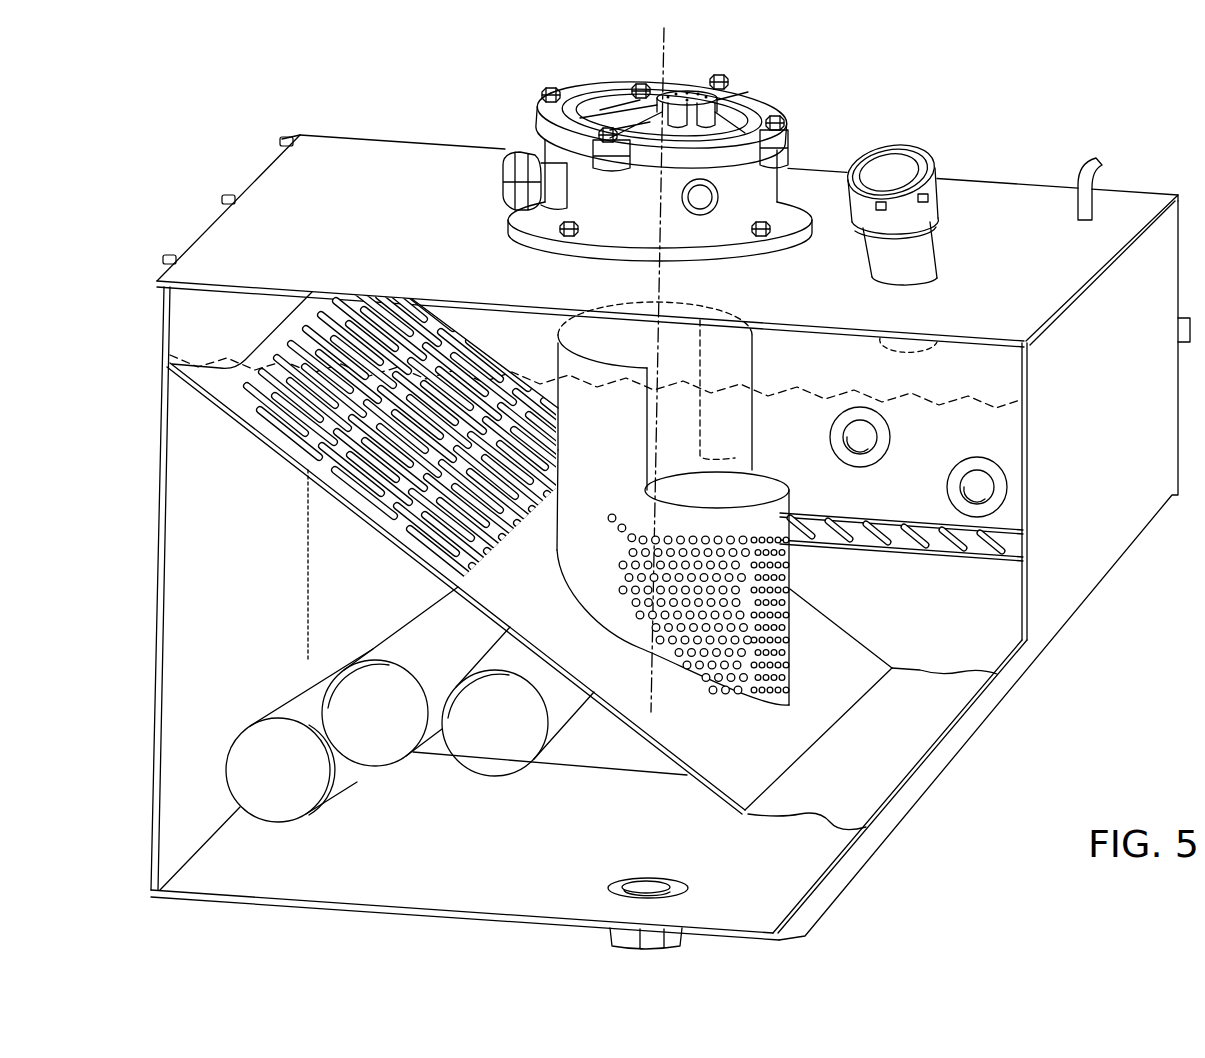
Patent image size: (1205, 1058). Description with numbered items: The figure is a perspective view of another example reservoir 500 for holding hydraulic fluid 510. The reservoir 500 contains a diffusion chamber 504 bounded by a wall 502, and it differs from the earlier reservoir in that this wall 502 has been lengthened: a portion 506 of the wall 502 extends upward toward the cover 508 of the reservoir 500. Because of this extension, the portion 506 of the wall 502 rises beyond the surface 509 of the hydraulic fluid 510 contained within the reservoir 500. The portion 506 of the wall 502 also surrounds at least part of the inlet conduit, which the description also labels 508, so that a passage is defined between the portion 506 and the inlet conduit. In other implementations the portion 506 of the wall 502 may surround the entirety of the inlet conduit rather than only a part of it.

The reservoir 500 is at (236, 88).
The wall 502 is at (603, 792).
The diffusion chamber 504 is at (583, 530).
The portion of the wall 506 is at (590, 313).
The cover 508 is at (368, 170).
The surface of the hydraulic fluid 509 is at (938, 398).
The hydraulic fluid 510 is at (932, 492).